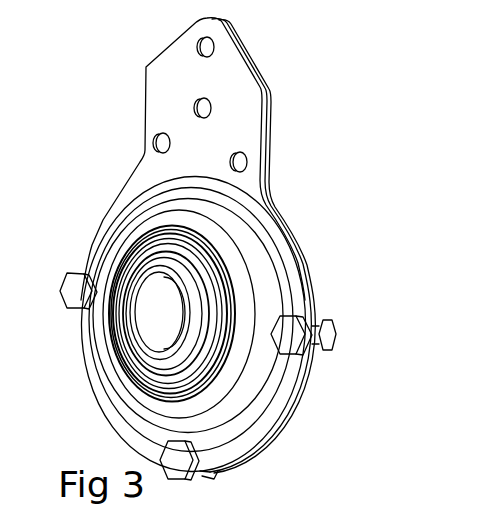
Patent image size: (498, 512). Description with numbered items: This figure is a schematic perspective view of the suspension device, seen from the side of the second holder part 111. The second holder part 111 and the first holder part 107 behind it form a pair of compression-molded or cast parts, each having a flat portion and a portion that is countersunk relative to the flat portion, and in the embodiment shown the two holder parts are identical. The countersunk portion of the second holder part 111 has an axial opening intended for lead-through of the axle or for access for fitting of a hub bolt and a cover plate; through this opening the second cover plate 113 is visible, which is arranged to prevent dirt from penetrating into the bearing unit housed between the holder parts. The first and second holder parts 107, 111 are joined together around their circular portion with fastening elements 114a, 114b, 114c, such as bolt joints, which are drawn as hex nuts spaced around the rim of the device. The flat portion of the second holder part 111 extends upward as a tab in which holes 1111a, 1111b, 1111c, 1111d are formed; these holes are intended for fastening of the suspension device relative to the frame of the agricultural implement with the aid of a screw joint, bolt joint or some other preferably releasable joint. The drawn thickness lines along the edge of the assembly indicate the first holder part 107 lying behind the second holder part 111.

The second holder part 111 is at (146, 97).
The first holder part 107 is at (266, 110).
The hole 1111a is at (199, 48).
The hole 1111b is at (209, 100).
The hole 1111c is at (156, 145).
The hole 1111d is at (247, 161).
The second cover plate 113 is at (147, 331).
The fastening element 114a is at (160, 466).
The fastening element 114b is at (59, 262).
The fastening element 114c is at (308, 318).